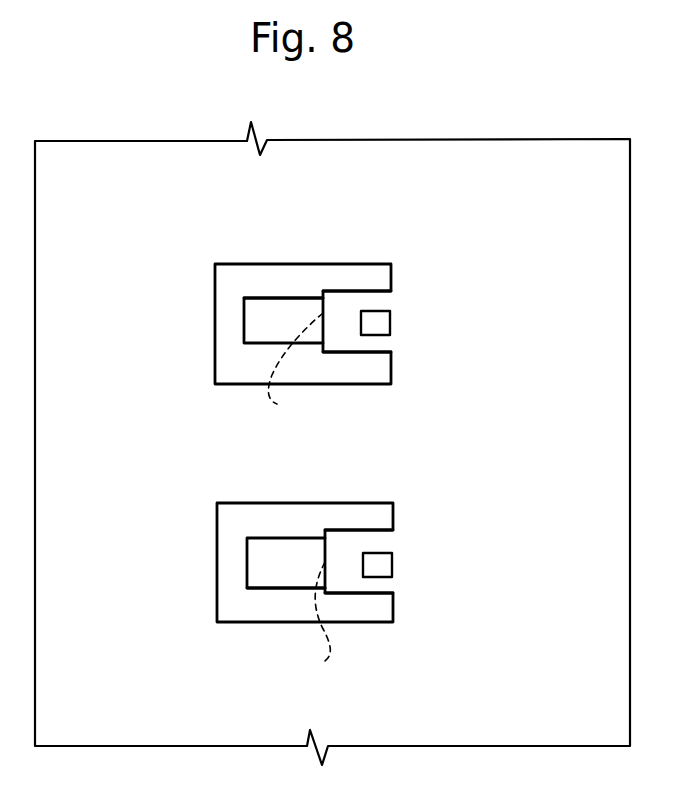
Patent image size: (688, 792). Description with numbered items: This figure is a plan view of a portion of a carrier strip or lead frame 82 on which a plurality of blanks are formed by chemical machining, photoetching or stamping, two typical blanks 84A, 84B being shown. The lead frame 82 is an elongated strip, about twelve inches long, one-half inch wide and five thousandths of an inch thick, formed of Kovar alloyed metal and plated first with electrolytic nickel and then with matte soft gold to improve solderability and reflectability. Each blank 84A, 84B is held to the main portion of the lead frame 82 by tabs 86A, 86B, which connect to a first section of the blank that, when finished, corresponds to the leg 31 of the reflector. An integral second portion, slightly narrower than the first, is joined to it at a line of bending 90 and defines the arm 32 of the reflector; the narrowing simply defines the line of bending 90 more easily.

The lead frame 82 is at (510, 134).
The leg 31 is at (343, 325).
The arm 32 is at (255, 322).
The blank 84A is at (277, 292).
The blank 84B is at (284, 597).
The tab 86A is at (382, 300).
The tab 86B is at (377, 347).
The line of bending 90 is at (299, 494).